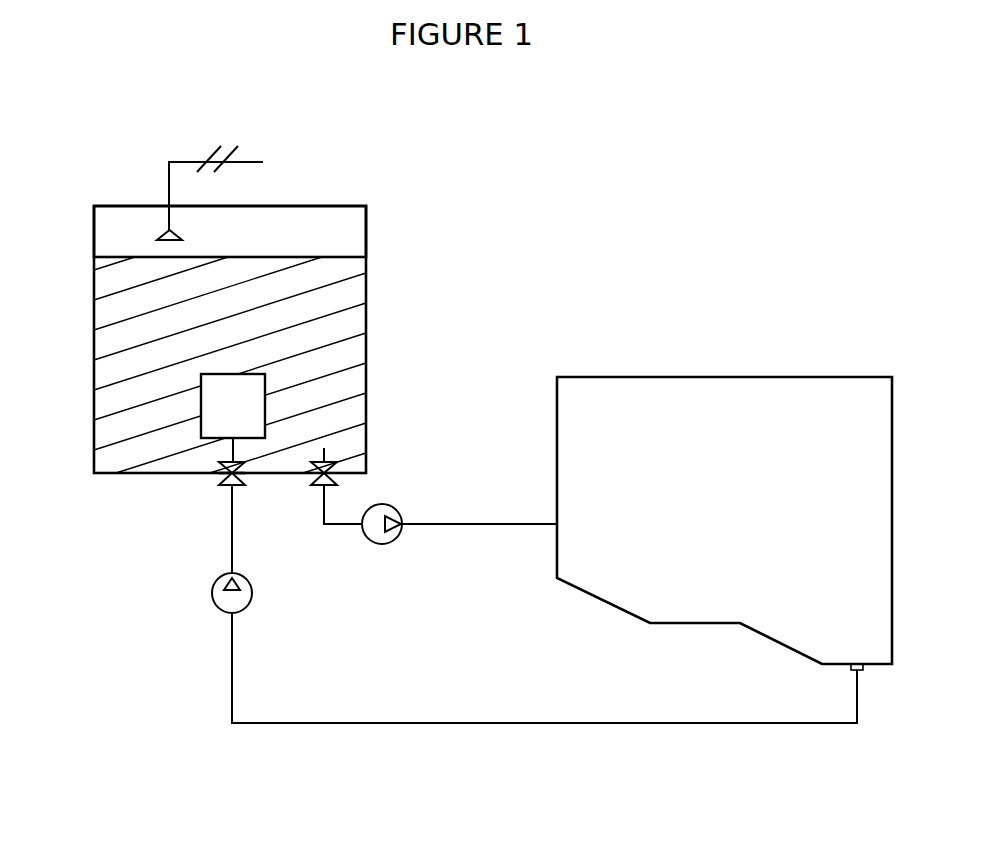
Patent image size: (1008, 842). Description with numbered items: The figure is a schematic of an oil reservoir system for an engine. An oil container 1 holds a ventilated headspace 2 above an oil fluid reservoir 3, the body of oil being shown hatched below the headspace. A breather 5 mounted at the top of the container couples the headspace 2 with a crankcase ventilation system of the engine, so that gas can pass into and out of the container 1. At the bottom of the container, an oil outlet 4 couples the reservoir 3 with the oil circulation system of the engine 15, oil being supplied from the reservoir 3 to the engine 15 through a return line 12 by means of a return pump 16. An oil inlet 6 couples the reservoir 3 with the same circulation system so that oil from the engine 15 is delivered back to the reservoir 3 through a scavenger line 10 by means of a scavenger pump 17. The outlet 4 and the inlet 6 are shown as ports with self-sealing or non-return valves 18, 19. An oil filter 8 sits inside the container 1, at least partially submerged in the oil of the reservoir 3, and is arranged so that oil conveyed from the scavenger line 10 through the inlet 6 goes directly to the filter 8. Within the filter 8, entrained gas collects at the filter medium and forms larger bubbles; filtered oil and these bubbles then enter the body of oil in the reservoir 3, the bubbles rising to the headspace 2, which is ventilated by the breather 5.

The oil container 1 is at (368, 287).
The ventilated headspace 2 is at (325, 230).
The oil fluid reservoir 3 is at (130, 373).
The oil outlet 4 is at (339, 477).
The breather 5 is at (160, 233).
The oil inlet 6 is at (217, 472).
The oil filter 8 is at (268, 402).
The scavenger line 10 is at (555, 720).
The return line 12 is at (470, 527).
The engine 15 is at (755, 375).
The return pump 16 is at (388, 548).
The scavenger pump 17 is at (255, 608).
The valve 18 is at (315, 488).
The valve 19 is at (221, 488).